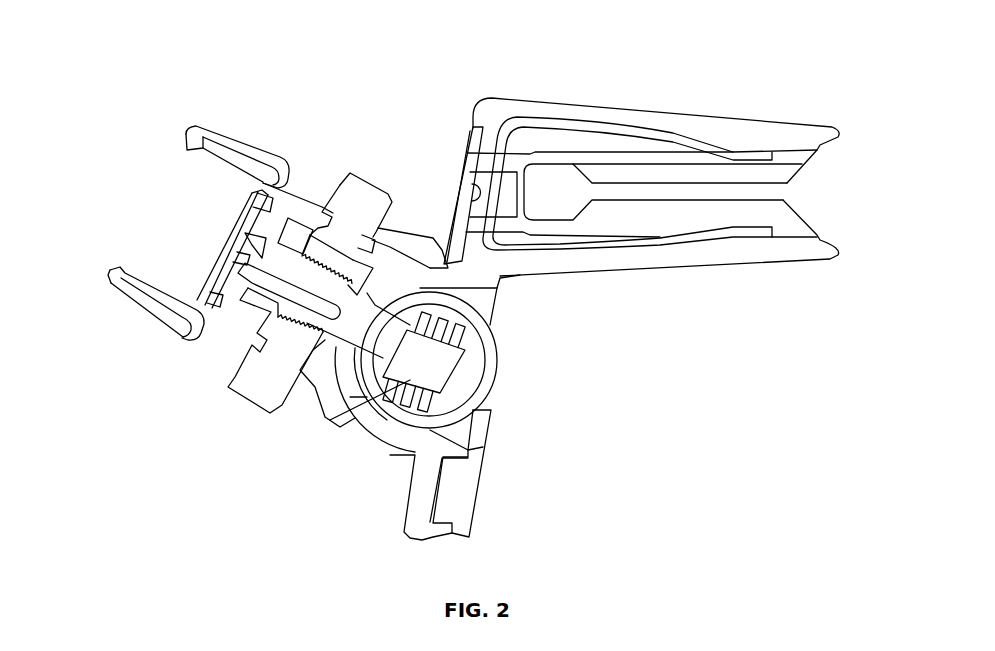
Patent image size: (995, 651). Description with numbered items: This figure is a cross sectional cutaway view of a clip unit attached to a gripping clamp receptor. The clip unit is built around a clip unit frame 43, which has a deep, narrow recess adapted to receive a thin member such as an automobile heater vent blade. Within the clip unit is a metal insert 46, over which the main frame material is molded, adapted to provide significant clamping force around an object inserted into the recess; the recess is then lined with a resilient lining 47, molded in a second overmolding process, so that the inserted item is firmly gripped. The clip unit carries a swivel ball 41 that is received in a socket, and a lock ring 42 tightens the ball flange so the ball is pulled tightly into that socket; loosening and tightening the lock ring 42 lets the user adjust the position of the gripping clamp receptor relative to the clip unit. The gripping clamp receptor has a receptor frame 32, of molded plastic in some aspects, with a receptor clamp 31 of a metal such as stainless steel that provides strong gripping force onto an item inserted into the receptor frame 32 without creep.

The receptor clamp 31 is at (133, 304).
The receptor frame 32 is at (135, 270).
The swivel ball 41 is at (497, 370).
The lock ring 42 is at (373, 181).
The clip unit frame 43 is at (528, 99).
The metal insert 46 is at (651, 268).
The resilient lining 47 is at (787, 183).